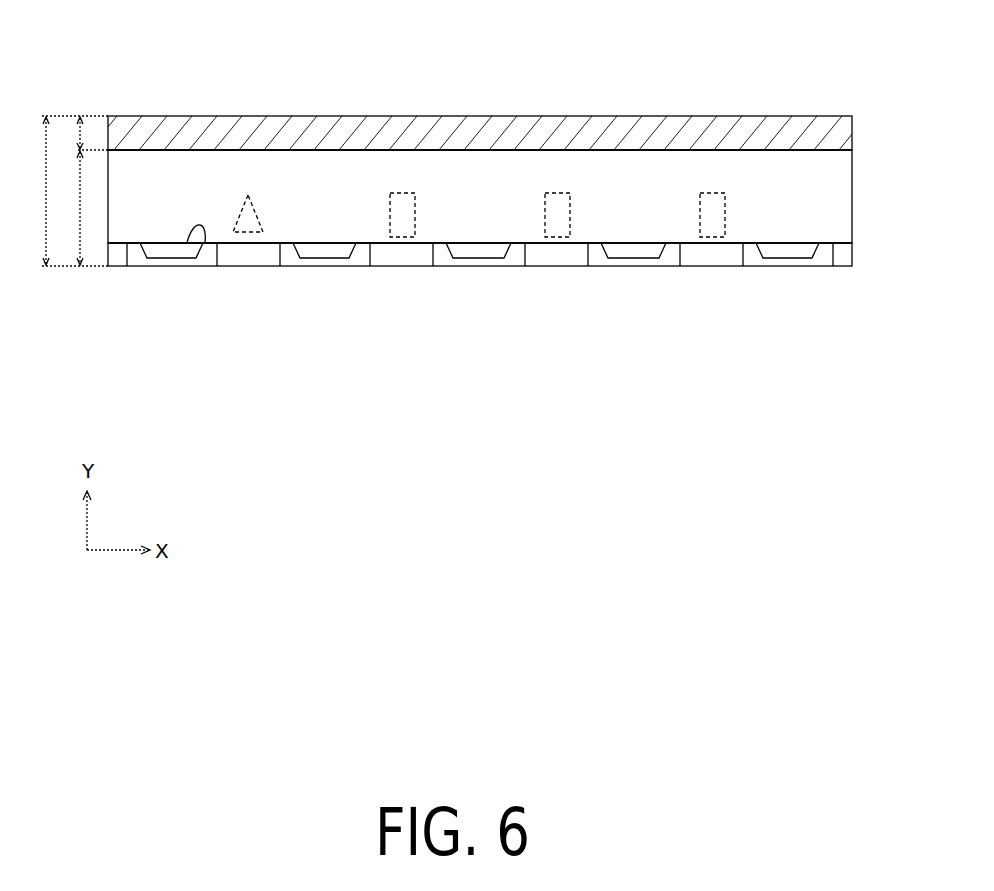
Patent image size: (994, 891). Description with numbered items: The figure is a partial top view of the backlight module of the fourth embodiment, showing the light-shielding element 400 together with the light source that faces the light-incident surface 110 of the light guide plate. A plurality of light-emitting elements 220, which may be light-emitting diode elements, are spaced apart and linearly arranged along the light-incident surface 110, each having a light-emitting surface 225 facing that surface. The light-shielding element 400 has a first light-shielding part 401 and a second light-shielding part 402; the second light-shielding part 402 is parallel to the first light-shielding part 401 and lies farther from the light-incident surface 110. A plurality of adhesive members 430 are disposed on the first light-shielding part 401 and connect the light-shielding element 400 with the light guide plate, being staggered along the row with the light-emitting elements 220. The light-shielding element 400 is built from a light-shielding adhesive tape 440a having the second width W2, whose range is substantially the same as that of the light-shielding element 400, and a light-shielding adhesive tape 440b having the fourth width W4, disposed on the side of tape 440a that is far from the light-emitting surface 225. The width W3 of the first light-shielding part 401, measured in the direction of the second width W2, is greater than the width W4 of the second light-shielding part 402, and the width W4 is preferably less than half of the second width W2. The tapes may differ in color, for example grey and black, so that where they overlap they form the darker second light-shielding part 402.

The light-shielding element 400 is at (511, 131).
The first light-shielding part 401 is at (853, 200).
The second light-shielding part 402 is at (853, 128).
The adhesive members 430 is at (270, 190).
The light-shielding adhesive tape 440a is at (200, 173).
The light-shielding adhesive tape 440b is at (153, 133).
The light-incident surface 110 is at (840, 267).
The light-emitting elements 220 is at (122, 257).
The light-emitting surface 225 is at (205, 244).
The second width W2 is at (33, 191).
The width of the first light-shielding part W3 is at (66, 208).
The fourth width W4 is at (66, 133).